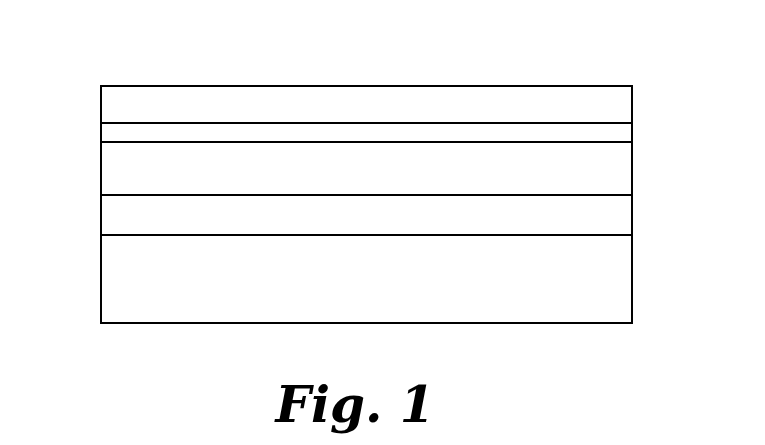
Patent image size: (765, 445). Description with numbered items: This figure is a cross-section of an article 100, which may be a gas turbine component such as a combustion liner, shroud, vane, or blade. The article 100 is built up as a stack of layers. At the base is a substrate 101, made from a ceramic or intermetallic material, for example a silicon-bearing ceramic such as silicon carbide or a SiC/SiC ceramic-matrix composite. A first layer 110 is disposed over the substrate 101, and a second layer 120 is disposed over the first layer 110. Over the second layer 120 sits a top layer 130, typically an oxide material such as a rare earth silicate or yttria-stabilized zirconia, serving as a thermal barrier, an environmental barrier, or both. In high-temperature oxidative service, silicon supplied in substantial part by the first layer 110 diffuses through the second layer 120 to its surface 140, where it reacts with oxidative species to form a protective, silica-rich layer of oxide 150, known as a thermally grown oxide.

The article 100 is at (100, 56).
The substrate 101 is at (101, 278).
The first layer 110 is at (101, 221).
The second layer 120 is at (101, 180).
The top layer 130 is at (101, 104).
The surface of second layer 140 is at (632, 140).
The layer of oxide 150 is at (101, 133).